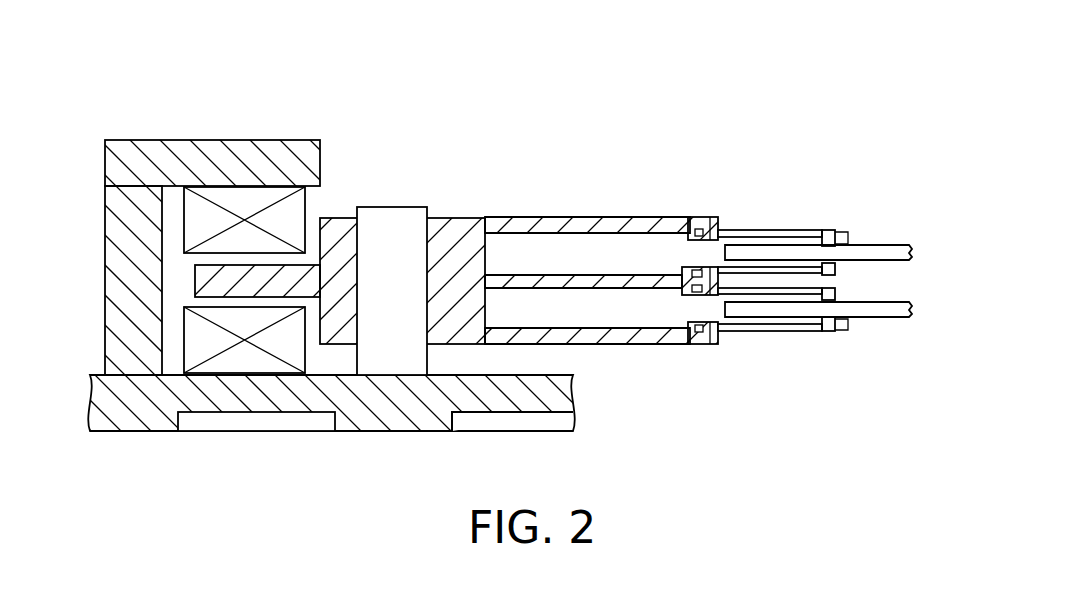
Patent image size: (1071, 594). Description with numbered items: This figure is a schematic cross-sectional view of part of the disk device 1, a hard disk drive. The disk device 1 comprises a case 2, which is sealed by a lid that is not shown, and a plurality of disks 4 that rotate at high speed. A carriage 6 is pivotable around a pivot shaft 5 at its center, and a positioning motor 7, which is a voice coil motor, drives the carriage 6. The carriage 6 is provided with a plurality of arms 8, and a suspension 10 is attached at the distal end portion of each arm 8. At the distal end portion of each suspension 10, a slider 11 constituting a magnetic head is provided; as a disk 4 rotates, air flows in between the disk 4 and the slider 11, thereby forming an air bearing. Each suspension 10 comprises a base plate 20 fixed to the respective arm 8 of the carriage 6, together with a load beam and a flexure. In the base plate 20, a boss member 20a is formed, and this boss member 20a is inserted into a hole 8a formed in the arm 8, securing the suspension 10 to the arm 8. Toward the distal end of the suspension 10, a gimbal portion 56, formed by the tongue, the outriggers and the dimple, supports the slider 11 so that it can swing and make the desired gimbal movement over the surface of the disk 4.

The disk device 1 is at (262, 95).
The case 2 is at (146, 433).
The disk 4 is at (900, 245).
The pivot shaft 5 is at (391, 218).
The carriage 6 is at (539, 217).
The positioning motor 7 is at (247, 358).
The arm 8 is at (628, 217).
The hole 8a is at (701, 217).
The suspension 10 is at (806, 268).
The slider 11 is at (847, 236).
The base plate 20 is at (718, 220).
The boss member 20a is at (693, 217).
The gimbal portion 56 is at (825, 230).